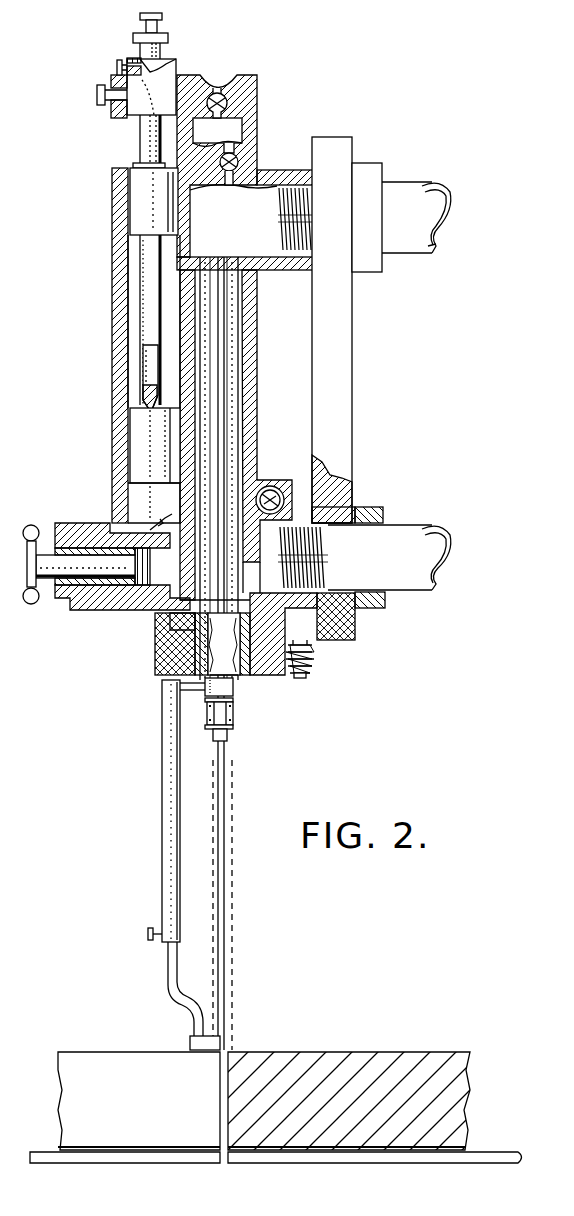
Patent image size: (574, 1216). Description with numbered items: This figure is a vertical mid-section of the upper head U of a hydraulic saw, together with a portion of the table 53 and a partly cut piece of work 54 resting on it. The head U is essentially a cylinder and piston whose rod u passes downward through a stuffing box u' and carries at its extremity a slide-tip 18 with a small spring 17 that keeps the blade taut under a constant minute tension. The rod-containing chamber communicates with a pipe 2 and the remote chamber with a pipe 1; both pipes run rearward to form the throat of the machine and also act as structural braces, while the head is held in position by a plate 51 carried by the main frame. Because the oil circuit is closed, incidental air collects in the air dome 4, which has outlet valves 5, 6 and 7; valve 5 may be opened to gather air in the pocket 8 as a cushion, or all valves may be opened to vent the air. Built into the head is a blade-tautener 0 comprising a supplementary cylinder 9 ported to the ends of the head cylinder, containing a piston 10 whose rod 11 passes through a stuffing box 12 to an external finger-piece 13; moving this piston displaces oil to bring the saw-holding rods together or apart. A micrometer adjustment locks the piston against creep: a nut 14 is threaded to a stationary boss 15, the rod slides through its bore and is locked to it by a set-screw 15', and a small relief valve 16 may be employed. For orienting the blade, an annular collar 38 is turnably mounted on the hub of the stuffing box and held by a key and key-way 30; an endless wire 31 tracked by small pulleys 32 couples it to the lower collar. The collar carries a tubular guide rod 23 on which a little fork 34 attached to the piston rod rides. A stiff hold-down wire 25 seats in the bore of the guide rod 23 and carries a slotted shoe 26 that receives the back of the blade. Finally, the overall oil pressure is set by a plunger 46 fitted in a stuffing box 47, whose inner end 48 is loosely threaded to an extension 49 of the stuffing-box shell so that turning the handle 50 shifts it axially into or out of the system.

The pipe 1 is at (430, 243).
The pipe 2 is at (430, 580).
The air dome 4 is at (197, 110).
The outlet valve 5 is at (228, 172).
The outlet valve 6 is at (224, 88).
The outlet valve 7 is at (275, 488).
The pocket 8 is at (229, 154).
The supplementary cylinder 9 is at (158, 508).
The piston 10 is at (135, 446).
The rod 11 is at (140, 133).
The stuffing box 12 is at (154, 199).
The finger-piece 13 is at (133, 37).
The nut 14 is at (151, 87).
The stationary boss 15 is at (105, 102).
The set-screw 15' is at (91, 71).
The relief valve 16 is at (97, 92).
The spring 17 is at (236, 722).
The slide-tip 18 is at (232, 742).
The guide rod 23 is at (153, 755).
The stiff wire 25 is at (168, 961).
The shoe 26 is at (190, 1040).
The key and key-way 30 is at (180, 625).
The endless wire 31 is at (312, 652).
The pulleys 32 is at (306, 676).
The fork 34 is at (190, 693).
The annular collar 38 is at (155, 640).
The plunger 46 is at (44, 530).
The stuffing box 47 is at (166, 520).
The inner end of plunger 48 is at (148, 578).
The extension 49 is at (152, 553).
The handle 50 is at (35, 605).
The plate 51 is at (340, 353).
The table 53 is at (496, 1150).
The work 54 is at (415, 1052).
The blade-tautener 0 is at (138, 298).
The upper head U is at (112, 366).
The piston rod u is at (241, 653).
The stuffing box u' is at (252, 685).